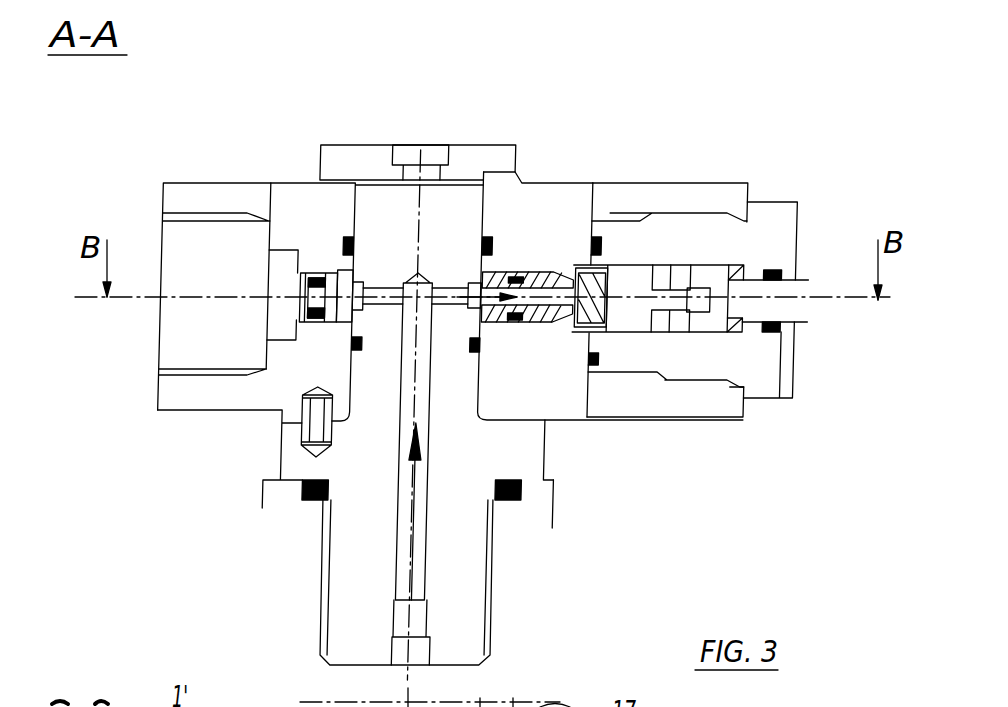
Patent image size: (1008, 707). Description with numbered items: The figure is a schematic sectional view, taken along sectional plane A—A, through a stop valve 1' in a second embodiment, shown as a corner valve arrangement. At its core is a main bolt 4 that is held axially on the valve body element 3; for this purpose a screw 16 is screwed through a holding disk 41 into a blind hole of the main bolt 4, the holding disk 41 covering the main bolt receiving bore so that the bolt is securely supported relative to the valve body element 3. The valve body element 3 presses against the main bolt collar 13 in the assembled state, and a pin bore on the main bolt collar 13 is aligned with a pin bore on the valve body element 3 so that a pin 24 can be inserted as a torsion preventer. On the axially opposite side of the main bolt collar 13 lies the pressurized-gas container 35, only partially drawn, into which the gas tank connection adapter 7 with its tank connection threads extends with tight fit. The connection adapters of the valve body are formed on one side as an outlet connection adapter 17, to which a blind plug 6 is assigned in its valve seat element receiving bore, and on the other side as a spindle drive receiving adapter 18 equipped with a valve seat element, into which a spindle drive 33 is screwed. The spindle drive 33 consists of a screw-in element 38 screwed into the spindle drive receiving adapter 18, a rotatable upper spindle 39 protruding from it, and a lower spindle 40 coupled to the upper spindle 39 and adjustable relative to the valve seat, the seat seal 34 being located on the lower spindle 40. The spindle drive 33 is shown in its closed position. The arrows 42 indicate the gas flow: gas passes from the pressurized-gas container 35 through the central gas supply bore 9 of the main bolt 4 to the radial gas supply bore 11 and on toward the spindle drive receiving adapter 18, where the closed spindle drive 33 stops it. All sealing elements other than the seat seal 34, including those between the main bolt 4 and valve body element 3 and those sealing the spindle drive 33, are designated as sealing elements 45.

The stop valve 1' is at (774, 27).
The valve body element 3 is at (523, 387).
The main bolt 4 is at (457, 401).
The blind plug 6 is at (332, 316).
The gas tank connection adapter 7 is at (458, 553).
The central gas supply bore 9 is at (418, 577).
The radial gas supply bore 11 is at (383, 289).
The main bolt collar 13 is at (547, 446).
The screw 16 is at (407, 158).
The outlet connection adapter 17 is at (183, 255).
The spindle drive receiving adapter 18 is at (688, 172).
The pin 24 is at (310, 426).
The spindle drive 33 is at (772, 170).
The seat seal 34 is at (612, 323).
The pressurized-gas container 35 is at (547, 497).
The screw-in element 38 is at (772, 218).
The upper spindle 39 is at (723, 288).
The lower spindle 40 is at (627, 310).
The holding disk 41 is at (473, 158).
The arrows 42 is at (463, 306).
The sealing elements 45 is at (313, 272).